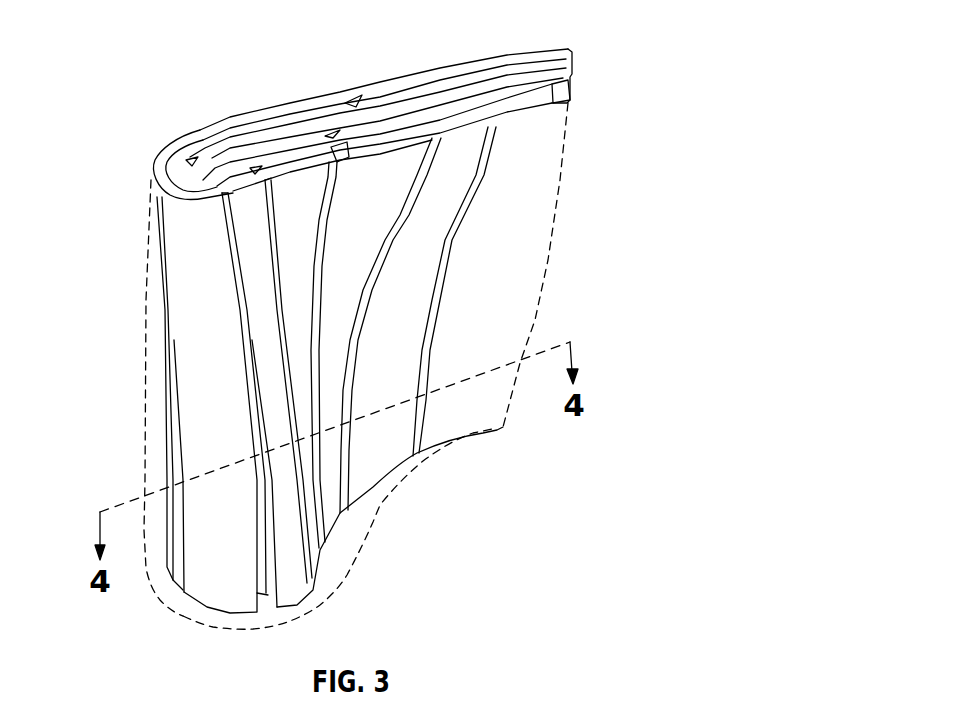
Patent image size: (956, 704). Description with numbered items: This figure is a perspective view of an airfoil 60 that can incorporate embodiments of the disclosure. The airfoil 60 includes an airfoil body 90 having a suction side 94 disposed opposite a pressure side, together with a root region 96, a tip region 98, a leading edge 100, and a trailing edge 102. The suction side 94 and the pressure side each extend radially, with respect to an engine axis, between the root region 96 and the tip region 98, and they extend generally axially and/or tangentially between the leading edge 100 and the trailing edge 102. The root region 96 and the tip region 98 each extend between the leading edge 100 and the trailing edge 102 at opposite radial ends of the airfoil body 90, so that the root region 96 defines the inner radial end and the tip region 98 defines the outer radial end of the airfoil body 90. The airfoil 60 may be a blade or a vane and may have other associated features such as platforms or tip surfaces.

The airfoil 60 is at (131, 362).
The airfoil body 90 is at (356, 586).
The suction side 94 is at (291, 96).
The root region 96 is at (423, 465).
The tip region 98 is at (427, 67).
The leading edge 100 is at (150, 437).
The trailing edge 102 is at (550, 253).